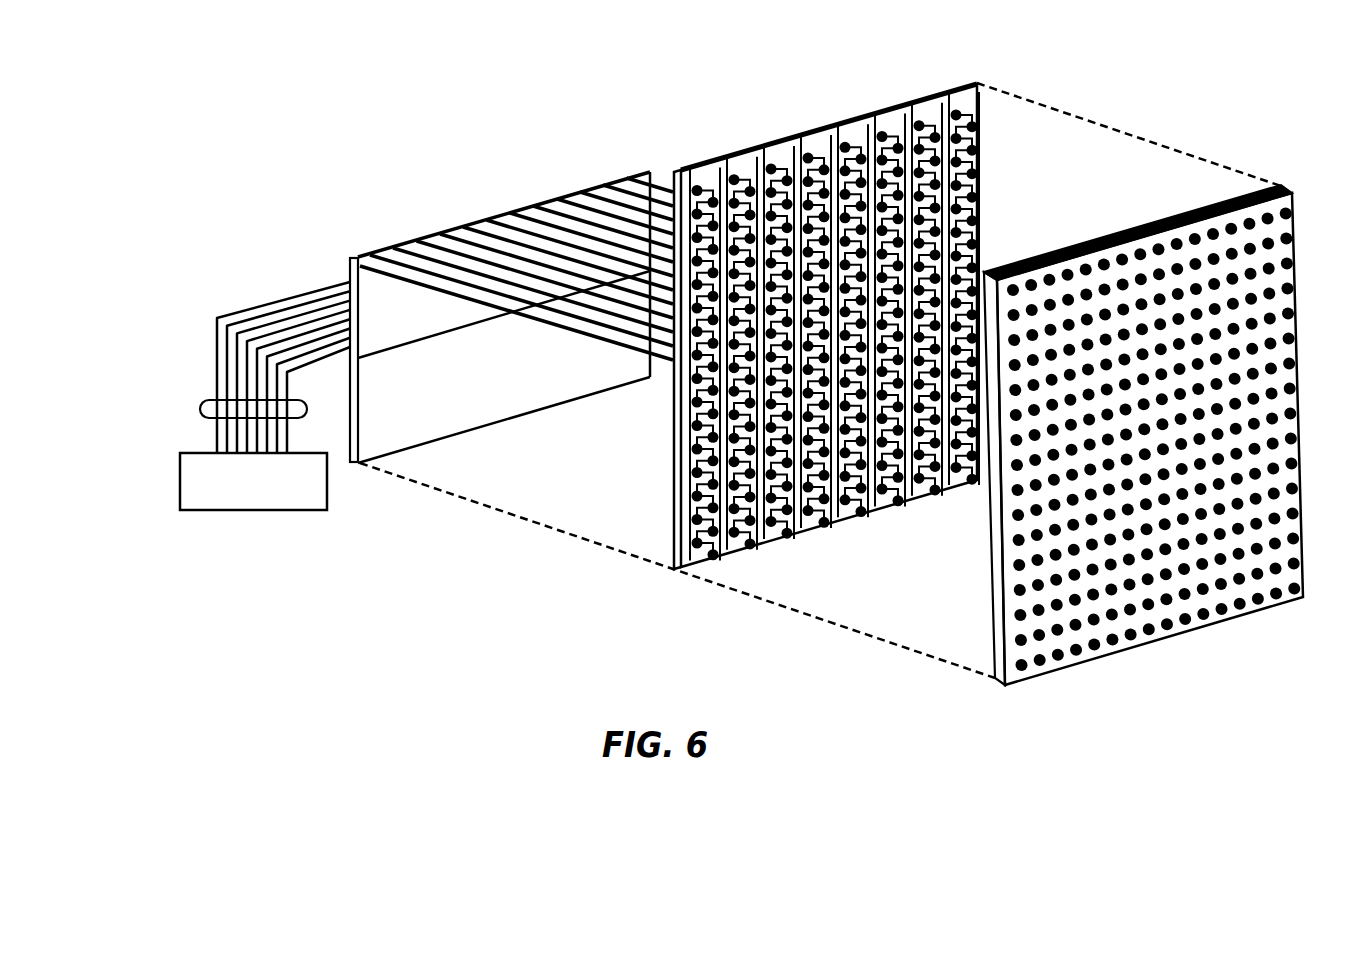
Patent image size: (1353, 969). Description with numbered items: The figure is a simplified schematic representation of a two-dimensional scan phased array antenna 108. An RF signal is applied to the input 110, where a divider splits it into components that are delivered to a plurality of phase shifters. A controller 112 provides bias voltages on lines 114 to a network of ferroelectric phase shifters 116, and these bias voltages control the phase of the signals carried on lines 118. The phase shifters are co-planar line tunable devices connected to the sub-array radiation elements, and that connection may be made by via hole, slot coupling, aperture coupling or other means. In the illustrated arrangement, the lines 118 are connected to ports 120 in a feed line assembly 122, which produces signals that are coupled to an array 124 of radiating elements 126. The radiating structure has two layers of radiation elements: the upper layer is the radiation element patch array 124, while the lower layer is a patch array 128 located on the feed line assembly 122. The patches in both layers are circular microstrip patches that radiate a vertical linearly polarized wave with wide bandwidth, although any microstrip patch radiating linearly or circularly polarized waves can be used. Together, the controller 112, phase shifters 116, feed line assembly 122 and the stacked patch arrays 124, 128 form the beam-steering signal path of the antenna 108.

The two-dimensional scan phased array antenna 108 is at (562, 597).
The input 110 is at (506, 421).
The controller 112 is at (250, 510).
The lines 114 is at (200, 409).
The ferroelectric phase shifters 116 is at (356, 258).
The lines 118 is at (583, 335).
The ports 120 is at (673, 378).
The feed line assembly 122 is at (872, 112).
The radiation element patch array 124 is at (1293, 222).
The radiating elements 126 is at (1288, 313).
The patch array 128 is at (999, 198).